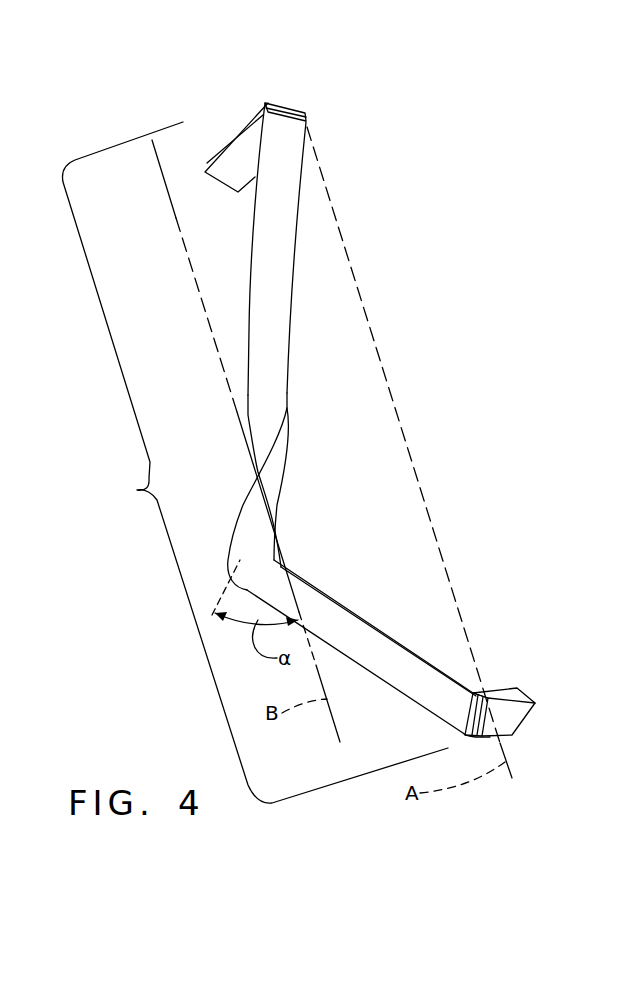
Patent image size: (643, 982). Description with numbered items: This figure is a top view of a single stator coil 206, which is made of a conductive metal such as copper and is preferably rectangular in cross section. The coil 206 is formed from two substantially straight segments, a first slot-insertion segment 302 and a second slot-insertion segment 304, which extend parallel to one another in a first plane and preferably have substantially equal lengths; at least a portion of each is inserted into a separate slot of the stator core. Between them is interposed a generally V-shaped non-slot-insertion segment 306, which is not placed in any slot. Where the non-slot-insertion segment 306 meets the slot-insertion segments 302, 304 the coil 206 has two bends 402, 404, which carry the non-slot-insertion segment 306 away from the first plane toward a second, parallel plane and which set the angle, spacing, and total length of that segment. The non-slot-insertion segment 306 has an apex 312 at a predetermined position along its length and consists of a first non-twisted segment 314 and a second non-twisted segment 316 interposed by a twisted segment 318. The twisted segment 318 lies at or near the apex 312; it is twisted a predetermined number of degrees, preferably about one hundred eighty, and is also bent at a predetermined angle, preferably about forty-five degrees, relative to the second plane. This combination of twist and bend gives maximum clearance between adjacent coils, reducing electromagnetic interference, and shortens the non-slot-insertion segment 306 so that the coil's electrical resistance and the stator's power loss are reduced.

The stator coil 206 is at (372, 130).
The first slot-insertion segment 302 is at (230, 143).
The second slot-insertion segment 304 is at (451, 681).
The non-slot-insertion segment 306 is at (137, 490).
The apex 312 is at (225, 553).
The first non-twisted segment 314 is at (270, 264).
The second non-twisted segment 316 is at (350, 640).
The twisted segment 318 is at (301, 491).
The bend 402 is at (283, 107).
The bend 404 is at (470, 710).